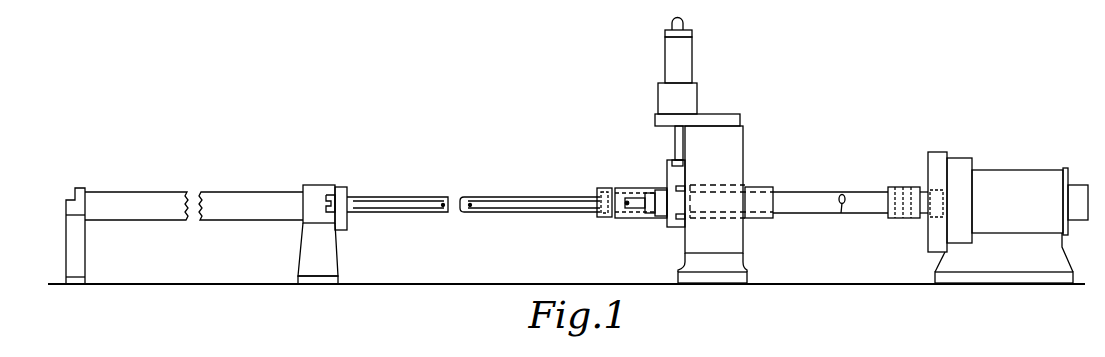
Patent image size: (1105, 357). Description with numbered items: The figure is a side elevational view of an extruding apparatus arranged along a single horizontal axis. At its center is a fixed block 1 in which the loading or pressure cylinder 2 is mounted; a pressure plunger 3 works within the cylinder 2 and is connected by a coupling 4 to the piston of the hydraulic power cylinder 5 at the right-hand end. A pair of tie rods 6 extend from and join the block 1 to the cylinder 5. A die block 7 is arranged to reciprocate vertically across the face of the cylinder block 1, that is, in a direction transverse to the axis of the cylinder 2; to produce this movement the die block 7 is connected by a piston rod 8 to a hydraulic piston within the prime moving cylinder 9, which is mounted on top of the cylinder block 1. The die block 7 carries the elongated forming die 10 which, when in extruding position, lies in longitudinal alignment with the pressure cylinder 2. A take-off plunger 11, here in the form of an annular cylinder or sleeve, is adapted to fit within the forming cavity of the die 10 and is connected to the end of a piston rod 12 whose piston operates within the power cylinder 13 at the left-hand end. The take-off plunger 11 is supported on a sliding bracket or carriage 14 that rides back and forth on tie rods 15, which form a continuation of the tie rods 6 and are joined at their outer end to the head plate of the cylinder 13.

The fixed block 1 is at (733, 138).
The pressure cylinder 2 is at (717, 200).
The pressure plunger 3 is at (788, 198).
The coupling 4 is at (903, 186).
The hydraulic power cylinder 5 is at (990, 180).
The tie rods 6 is at (860, 198).
The die block 7 is at (668, 176).
The piston rod 8 is at (672, 141).
The prime moving cylinder 9 is at (685, 64).
The forming die 10 is at (619, 220).
The take-off plunger 11 is at (637, 218).
The piston rod 12 is at (484, 195).
The power cylinder 13 is at (250, 195).
The sliding bracket 14 is at (607, 186).
The tie rods 15 is at (398, 205).